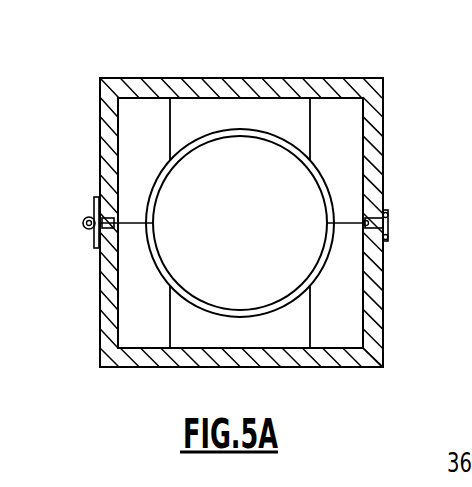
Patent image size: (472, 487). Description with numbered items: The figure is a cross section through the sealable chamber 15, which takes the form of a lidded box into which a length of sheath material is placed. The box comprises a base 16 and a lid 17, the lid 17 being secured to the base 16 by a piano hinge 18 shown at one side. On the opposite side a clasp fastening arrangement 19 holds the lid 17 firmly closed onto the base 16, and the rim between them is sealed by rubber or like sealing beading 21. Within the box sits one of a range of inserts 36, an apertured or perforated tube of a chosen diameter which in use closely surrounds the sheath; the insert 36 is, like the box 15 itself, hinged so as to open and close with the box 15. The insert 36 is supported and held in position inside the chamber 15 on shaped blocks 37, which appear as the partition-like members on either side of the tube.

The sealable chamber 15 is at (383, 316).
The base 16 is at (105, 323).
The lid 17 is at (372, 130).
The piano hinge 18 is at (84, 219).
The clasp fastening arrangement 19 is at (389, 226).
The sealing beading 21 is at (95, 198).
The insert 36 is at (327, 189).
The shaped block 37 is at (290, 108).